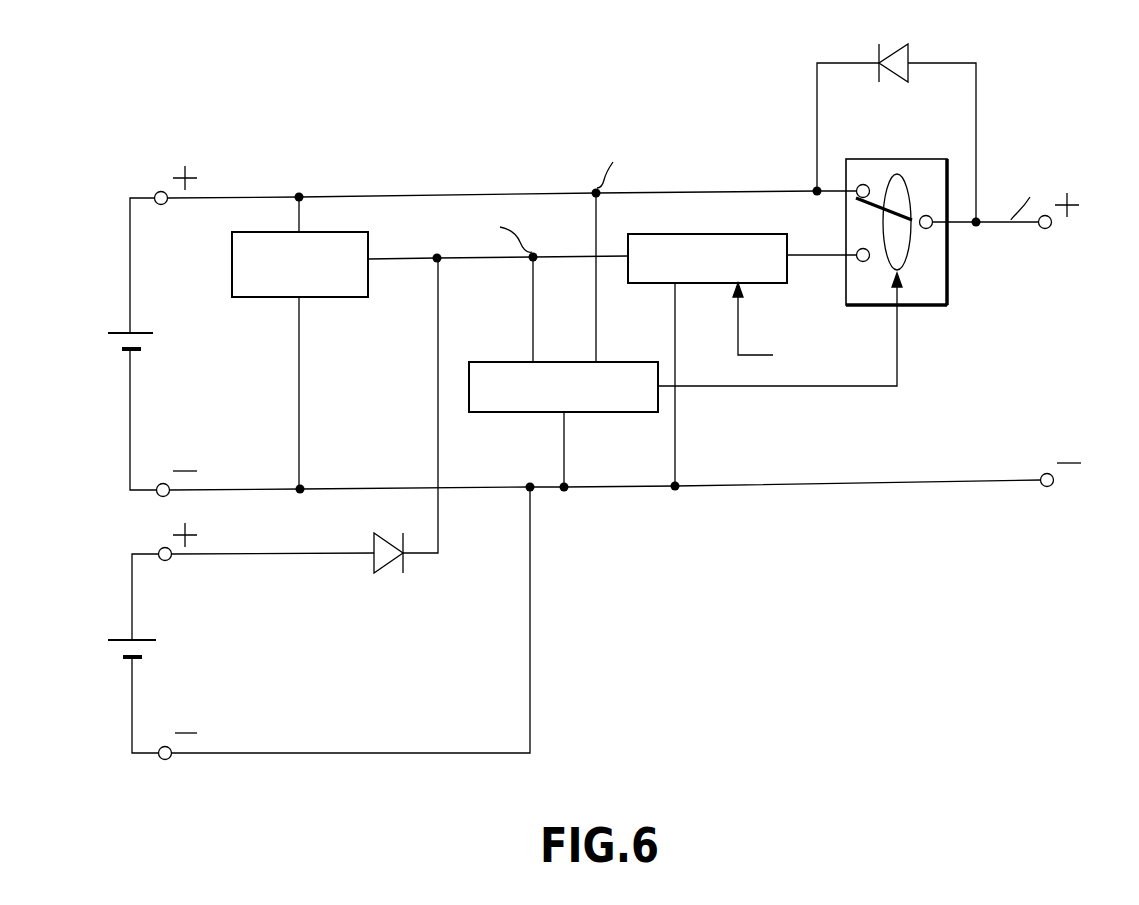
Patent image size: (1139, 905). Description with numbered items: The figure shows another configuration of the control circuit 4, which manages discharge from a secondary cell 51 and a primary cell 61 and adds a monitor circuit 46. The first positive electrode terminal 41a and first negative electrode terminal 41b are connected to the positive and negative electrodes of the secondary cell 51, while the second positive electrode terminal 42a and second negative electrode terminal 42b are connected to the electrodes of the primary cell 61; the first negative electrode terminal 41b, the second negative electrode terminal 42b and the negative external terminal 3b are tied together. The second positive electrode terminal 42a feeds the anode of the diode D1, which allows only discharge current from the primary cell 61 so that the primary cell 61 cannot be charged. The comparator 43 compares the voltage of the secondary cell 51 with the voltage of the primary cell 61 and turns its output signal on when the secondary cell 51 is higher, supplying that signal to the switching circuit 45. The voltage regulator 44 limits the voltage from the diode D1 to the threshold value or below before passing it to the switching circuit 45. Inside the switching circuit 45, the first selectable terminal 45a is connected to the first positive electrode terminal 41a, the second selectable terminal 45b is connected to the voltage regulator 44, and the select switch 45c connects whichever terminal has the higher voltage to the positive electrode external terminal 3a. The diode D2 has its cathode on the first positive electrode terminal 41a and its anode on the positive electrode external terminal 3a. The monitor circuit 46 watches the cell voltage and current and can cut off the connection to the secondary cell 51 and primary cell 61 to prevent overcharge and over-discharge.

The positive electrode external terminal 3a is at (1050, 228).
The negative external terminal 3b is at (1050, 485).
The control circuit 4 is at (972, 545).
The first positive electrode terminal 41a is at (163, 190).
The first negative electrode terminal 41b is at (165, 482).
The second positive electrode terminal 42a is at (168, 561).
The second negative electrode terminal 42b is at (166, 746).
The comparator 43 is at (490, 362).
The voltage regulator 44 is at (642, 287).
The switching circuit 45 is at (920, 306).
The first selectable terminal 45a is at (862, 184).
The second selectable terminal 45b is at (866, 262).
The select switch 45c is at (900, 200).
The monitor circuit 46 is at (340, 298).
The secondary cell 51 is at (115, 331).
The primary cell 61 is at (120, 640).
The diode D1 is at (388, 542).
The diode D2 is at (896, 119).